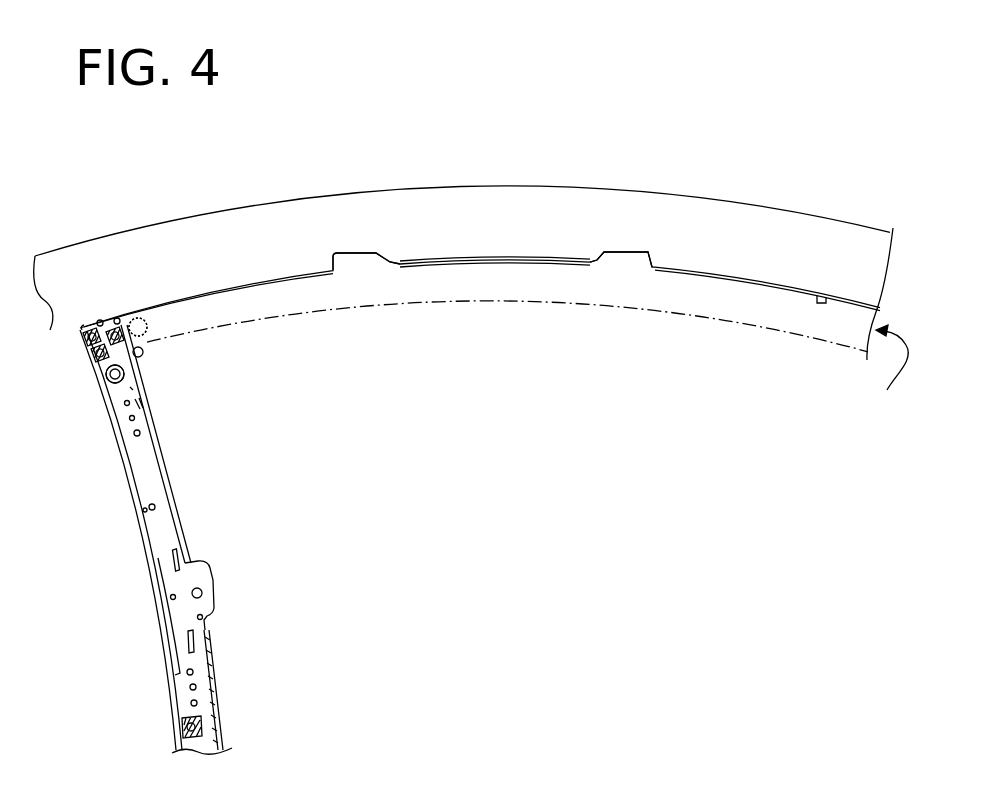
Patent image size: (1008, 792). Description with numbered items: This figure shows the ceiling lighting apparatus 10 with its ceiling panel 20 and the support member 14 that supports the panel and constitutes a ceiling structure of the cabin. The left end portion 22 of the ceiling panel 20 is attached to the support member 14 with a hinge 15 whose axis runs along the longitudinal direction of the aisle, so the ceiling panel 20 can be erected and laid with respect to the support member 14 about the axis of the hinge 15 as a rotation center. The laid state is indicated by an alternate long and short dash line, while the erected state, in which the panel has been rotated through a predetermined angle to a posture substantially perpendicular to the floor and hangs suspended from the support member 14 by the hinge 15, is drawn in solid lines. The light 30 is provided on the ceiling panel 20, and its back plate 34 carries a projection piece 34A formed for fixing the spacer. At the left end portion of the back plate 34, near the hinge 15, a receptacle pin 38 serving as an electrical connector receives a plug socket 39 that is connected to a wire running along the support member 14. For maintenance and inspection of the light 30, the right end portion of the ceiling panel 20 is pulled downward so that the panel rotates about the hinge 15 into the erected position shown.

The ceiling lighting apparatus 10 is at (890, 370).
The support member 14 is at (745, 204).
The hinge 15 is at (88, 324).
The ceiling panel 20 is at (747, 325).
The left end portion 22 is at (104, 318).
The light 30 is at (797, 287).
The back plate 34 is at (495, 270).
The projection piece 34A is at (362, 252).
The receptacle pin 38 is at (135, 317).
The plug socket 39 is at (135, 317).